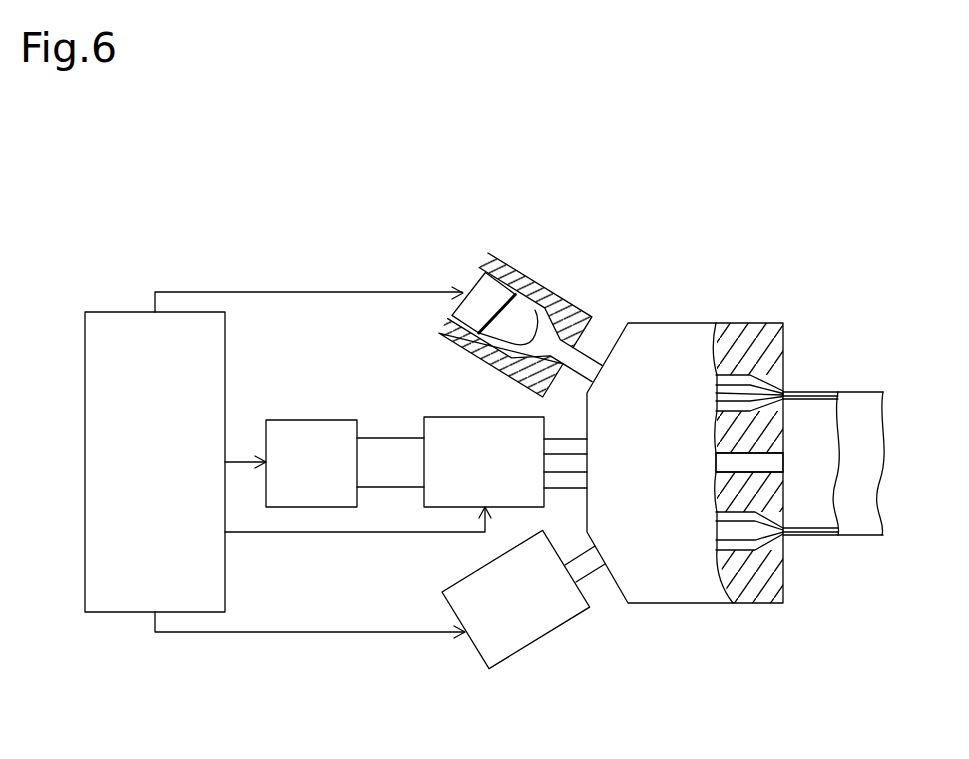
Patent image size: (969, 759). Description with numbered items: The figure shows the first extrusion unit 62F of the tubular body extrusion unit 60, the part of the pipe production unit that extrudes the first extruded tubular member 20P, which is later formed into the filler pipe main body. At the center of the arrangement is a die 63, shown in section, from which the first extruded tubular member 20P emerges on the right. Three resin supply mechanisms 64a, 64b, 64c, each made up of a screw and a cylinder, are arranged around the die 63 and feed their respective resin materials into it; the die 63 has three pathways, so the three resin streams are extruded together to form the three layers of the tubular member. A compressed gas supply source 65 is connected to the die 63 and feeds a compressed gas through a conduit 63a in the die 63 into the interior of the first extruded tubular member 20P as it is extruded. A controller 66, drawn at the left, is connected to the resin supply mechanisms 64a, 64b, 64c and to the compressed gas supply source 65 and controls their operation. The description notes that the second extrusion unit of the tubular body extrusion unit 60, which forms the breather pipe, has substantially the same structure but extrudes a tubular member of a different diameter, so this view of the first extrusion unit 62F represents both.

The tubular body extrusion unit 60 is at (615, 250).
The first extrusion unit 62F is at (651, 275).
The die 63 is at (686, 323).
The conduit 63a is at (770, 462).
The resin supply mechanism 64a is at (508, 265).
The resin supply mechanism 64b is at (452, 417).
The resin supply mechanism 64c is at (452, 586).
The compressed gas supply source 65 is at (292, 420).
The controller 66 is at (108, 312).
The first extruded tubular member 20P is at (860, 398).